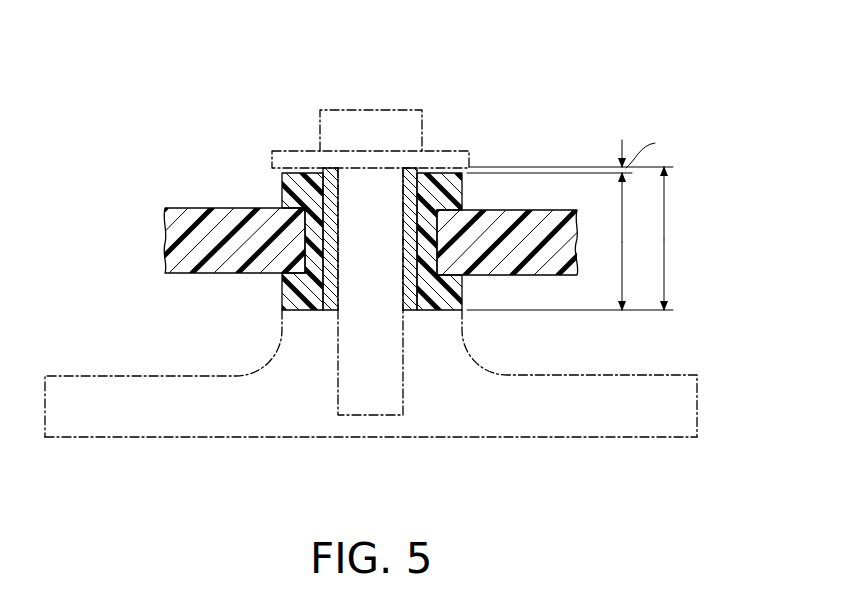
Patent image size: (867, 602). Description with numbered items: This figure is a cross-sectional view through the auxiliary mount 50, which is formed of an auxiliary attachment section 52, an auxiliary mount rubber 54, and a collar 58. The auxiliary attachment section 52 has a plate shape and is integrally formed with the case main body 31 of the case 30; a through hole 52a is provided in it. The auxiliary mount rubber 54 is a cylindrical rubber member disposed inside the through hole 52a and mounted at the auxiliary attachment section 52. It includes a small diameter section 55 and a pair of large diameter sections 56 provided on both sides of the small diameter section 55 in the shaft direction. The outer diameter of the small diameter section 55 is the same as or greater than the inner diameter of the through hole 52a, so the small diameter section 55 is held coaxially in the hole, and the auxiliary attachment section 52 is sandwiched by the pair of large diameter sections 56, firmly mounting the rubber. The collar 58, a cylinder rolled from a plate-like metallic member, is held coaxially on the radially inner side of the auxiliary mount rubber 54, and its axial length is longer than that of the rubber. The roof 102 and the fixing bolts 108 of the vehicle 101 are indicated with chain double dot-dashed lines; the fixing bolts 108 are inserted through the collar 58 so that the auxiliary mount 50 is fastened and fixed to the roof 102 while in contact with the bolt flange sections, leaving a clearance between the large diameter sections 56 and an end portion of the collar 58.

The auxiliary mount 50 is at (210, 92).
The fixing bolt 108 is at (372, 115).
The collar 58 is at (412, 166).
The auxiliary mount rubber 54 is at (458, 197).
The through hole 52a is at (433, 220).
The auxiliary attachment section 52 is at (528, 218).
The case main body 31 is at (199, 207).
The case 30 is at (236, 200).
The large diameter section 56 is at (305, 188).
The small diameter section 55 is at (305, 240).
The vehicle 101 is at (93, 440).
The roof 102 is at (168, 440).